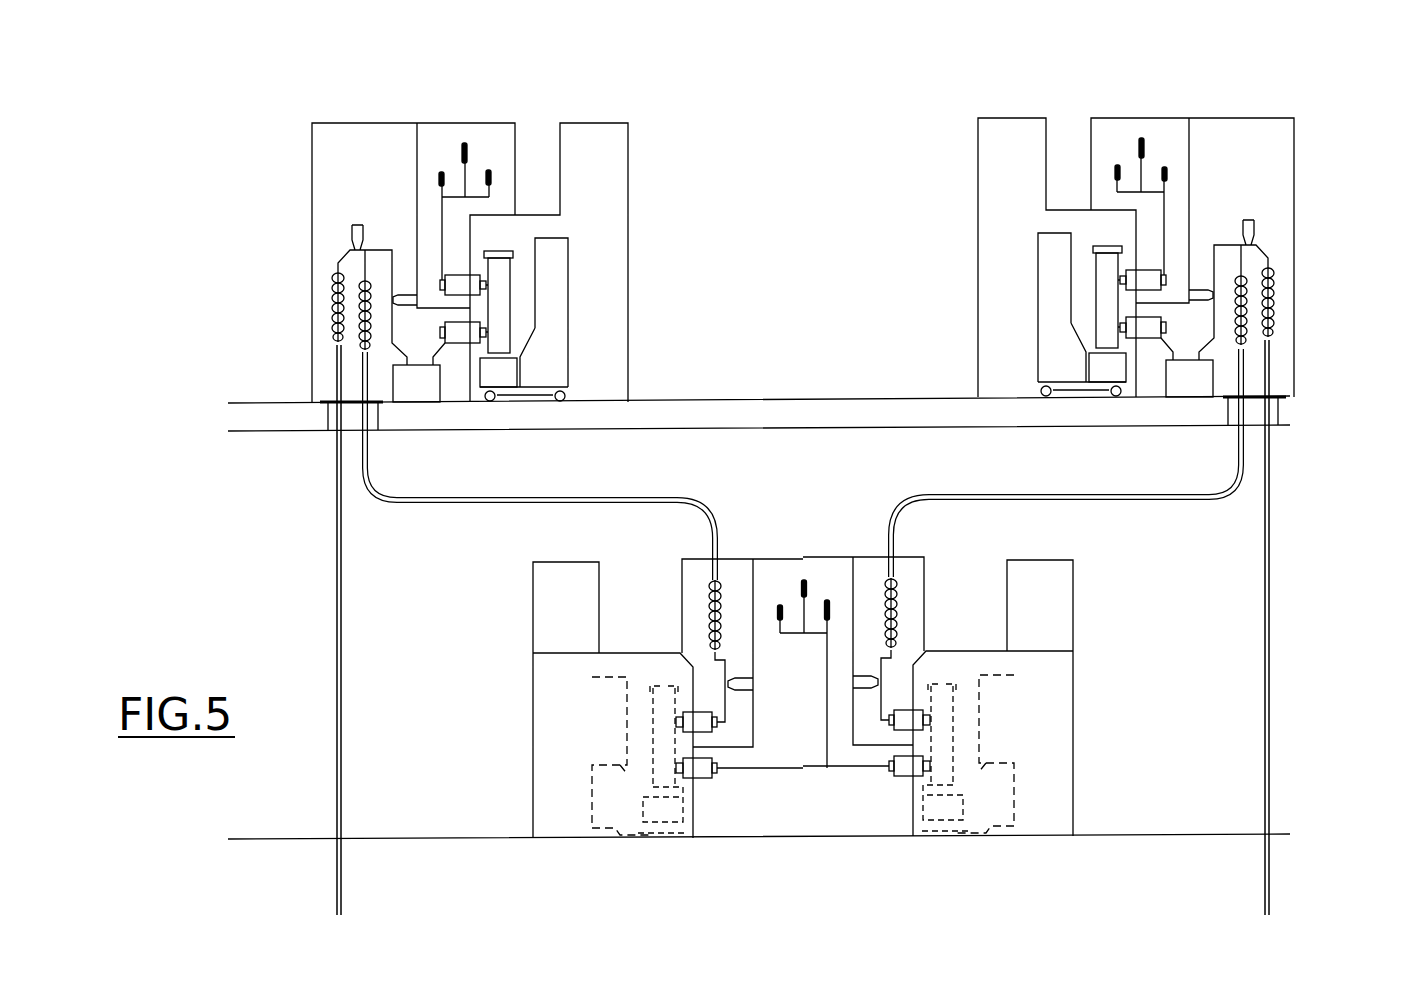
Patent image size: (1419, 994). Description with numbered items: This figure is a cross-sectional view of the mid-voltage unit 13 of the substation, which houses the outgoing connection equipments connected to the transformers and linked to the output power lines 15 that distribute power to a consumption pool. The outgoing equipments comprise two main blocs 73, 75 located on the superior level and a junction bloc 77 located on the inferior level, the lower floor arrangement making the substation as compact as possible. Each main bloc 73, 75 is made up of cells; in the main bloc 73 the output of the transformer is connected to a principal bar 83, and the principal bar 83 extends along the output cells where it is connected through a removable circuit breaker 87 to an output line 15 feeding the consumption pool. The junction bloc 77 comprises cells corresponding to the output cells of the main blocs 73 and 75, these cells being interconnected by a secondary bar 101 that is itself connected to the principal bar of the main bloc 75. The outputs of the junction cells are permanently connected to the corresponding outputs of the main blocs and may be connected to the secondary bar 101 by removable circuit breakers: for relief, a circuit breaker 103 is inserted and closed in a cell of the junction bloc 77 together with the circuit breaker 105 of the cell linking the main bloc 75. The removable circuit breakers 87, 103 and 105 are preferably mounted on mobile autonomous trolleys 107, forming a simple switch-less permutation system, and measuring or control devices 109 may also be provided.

The mid-voltage unit 13 is at (360, 597).
The output power line 15 is at (340, 530).
The main bloc 73 is at (662, 220).
The main bloc 75 is at (952, 228).
The junction bloc 77 is at (1087, 628).
The principal bar 83 is at (489, 170).
The removable circuit breaker 87 is at (498, 307).
The secondary bar 101 is at (827, 600).
The circuit breaker 103 is at (662, 765).
The circuit breaker 105 is at (943, 730).
The mobile autonomous trolley 107 is at (557, 357).
The measuring or control device 109 is at (417, 387).